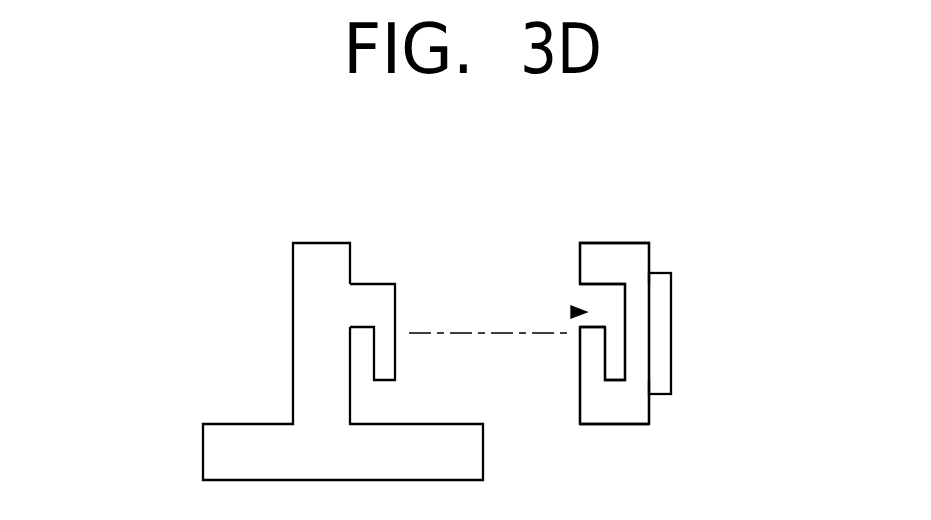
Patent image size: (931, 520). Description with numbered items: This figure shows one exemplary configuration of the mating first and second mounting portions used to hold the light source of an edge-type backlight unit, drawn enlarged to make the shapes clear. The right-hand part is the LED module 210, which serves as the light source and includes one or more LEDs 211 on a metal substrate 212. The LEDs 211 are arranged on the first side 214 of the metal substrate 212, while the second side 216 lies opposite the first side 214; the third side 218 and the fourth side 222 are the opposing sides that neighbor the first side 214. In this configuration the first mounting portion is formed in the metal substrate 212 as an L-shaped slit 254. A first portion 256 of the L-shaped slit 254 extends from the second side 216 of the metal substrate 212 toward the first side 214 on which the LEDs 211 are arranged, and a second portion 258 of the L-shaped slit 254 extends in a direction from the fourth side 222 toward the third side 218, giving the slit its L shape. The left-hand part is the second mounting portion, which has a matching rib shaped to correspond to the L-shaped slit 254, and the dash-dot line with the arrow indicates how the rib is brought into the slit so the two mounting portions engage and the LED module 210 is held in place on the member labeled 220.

The LED module 210 is at (621, 317).
The LED 211 is at (663, 313).
The metal substrate 212 is at (617, 402).
The first side 214 is at (650, 407).
The second side 216 is at (577, 382).
The third side 218 is at (595, 425).
The first connector / plug 220 is at (214, 325).
The fourth side 222 is at (613, 243).
The L-shaped slit 254 is at (572, 311).
The first portion 256 is at (603, 301).
The second portion 258 is at (613, 358).